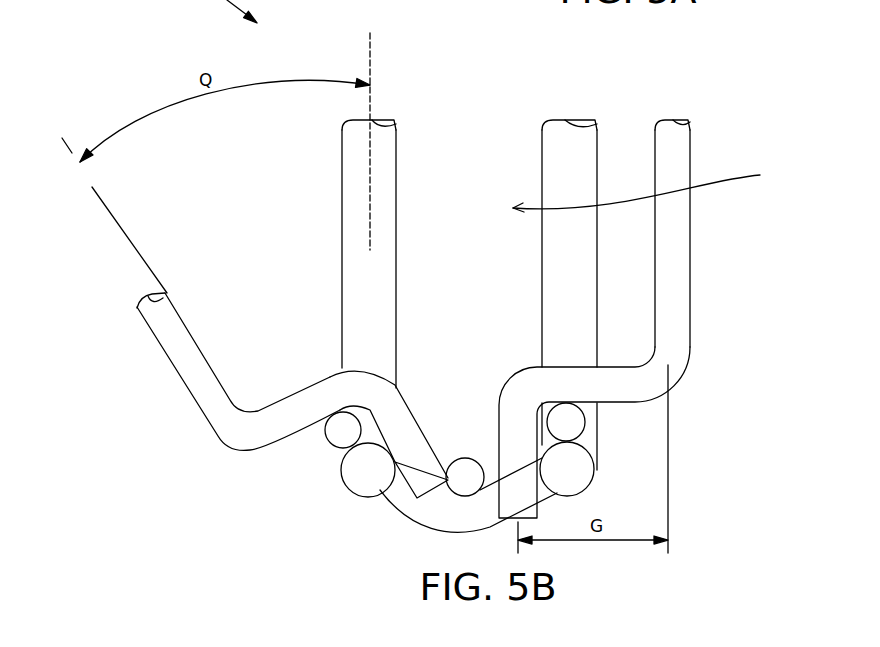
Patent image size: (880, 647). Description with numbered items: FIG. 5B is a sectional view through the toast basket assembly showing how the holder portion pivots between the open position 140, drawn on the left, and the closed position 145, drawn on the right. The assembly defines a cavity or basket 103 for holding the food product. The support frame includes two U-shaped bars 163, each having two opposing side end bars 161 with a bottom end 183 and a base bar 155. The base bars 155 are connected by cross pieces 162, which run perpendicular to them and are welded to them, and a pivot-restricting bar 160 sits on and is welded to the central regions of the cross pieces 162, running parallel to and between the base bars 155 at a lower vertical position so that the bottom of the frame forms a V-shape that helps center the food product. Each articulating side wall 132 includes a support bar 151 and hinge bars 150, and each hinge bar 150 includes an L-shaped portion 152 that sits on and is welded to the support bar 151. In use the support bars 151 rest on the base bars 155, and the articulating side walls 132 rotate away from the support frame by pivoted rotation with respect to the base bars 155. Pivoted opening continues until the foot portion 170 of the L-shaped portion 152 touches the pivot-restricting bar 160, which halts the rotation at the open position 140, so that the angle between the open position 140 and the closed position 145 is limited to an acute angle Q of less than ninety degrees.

The cavity or basket 103 is at (656, 187).
The articulating side wall 132 is at (165, 292).
The open position 140 is at (134, 105).
The closed position 145 is at (675, 89).
The hinge bar 150 is at (160, 350).
The support bar 151 is at (326, 438).
The L-shaped portion 152 is at (380, 373).
The base bar 155 is at (343, 484).
The pivot-restricting bar 160 is at (458, 459).
The side end bar 161 is at (343, 310).
The cross piece 162 is at (417, 515).
The U-shaped bar 163 is at (342, 258).
The foot portion 170 is at (427, 452).
The bottom end 183 is at (596, 442).